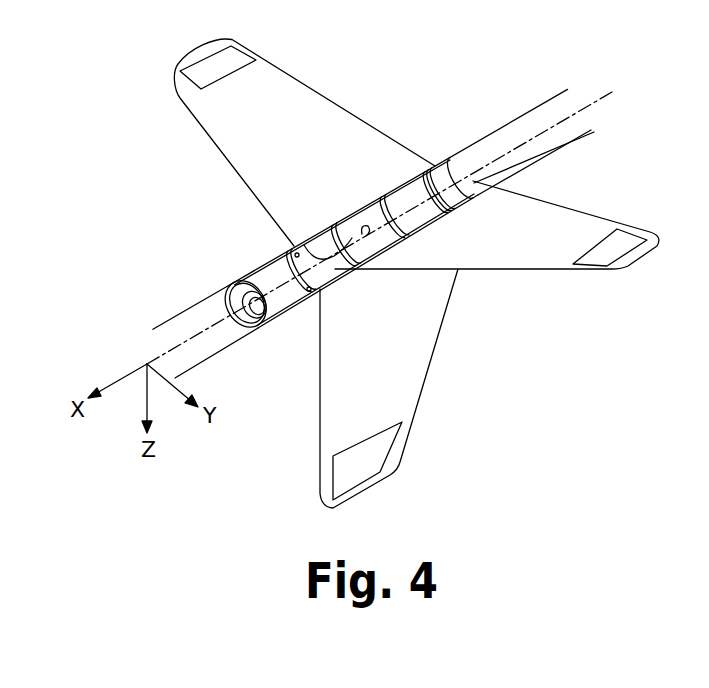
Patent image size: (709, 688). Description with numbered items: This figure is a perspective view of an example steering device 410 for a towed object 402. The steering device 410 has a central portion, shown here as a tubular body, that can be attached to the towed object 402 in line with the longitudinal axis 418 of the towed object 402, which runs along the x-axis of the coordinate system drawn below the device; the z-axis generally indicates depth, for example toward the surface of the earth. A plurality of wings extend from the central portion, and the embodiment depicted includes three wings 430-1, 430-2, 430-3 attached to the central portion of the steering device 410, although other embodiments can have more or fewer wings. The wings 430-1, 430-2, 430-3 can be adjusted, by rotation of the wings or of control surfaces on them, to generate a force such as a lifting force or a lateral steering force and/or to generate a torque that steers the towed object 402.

The towed object 402 is at (184, 315).
The steering device 410 is at (234, 269).
The longitudinal axis 418 is at (610, 92).
The wing 430-1 is at (190, 108).
The wing 430-2 is at (594, 212).
The wing 430-3 is at (422, 356).